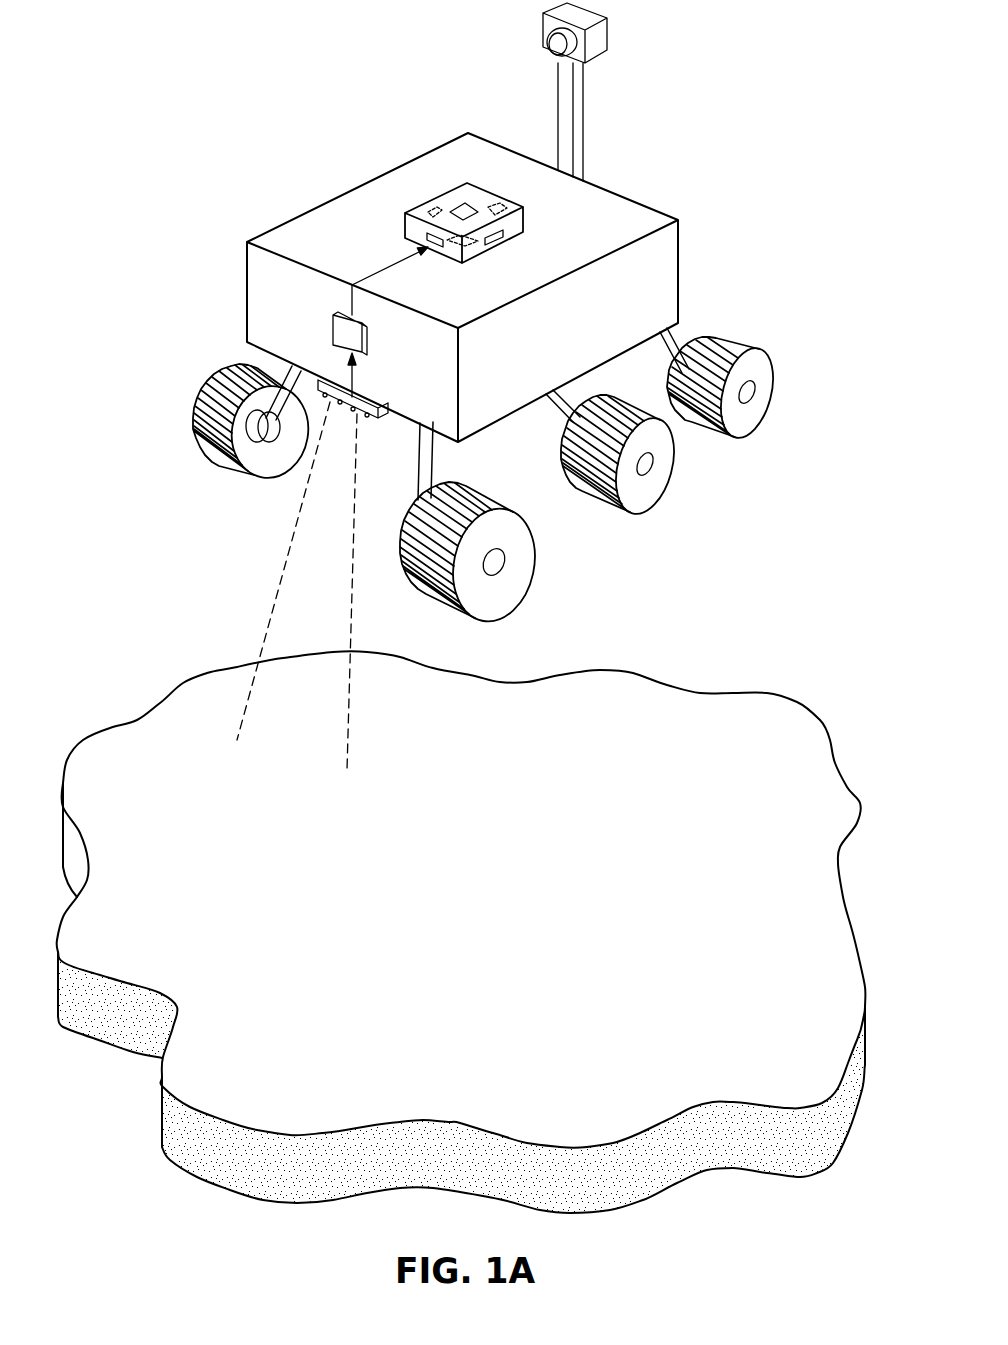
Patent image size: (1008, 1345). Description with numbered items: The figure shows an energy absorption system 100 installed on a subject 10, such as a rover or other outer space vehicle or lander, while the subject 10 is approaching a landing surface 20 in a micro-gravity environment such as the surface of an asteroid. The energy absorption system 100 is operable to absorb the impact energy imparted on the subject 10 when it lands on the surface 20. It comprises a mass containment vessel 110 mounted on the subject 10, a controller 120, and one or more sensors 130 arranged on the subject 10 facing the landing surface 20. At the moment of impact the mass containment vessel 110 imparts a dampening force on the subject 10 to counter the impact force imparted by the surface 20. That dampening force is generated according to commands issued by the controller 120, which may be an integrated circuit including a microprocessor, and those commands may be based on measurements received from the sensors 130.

The subject 10 is at (622, 208).
The landing surface 20 is at (718, 713).
The energy absorption system 100 is at (178, 163).
The mass containment vessel 110 is at (417, 213).
The controller 120 is at (333, 320).
The sensors 130 is at (326, 386).